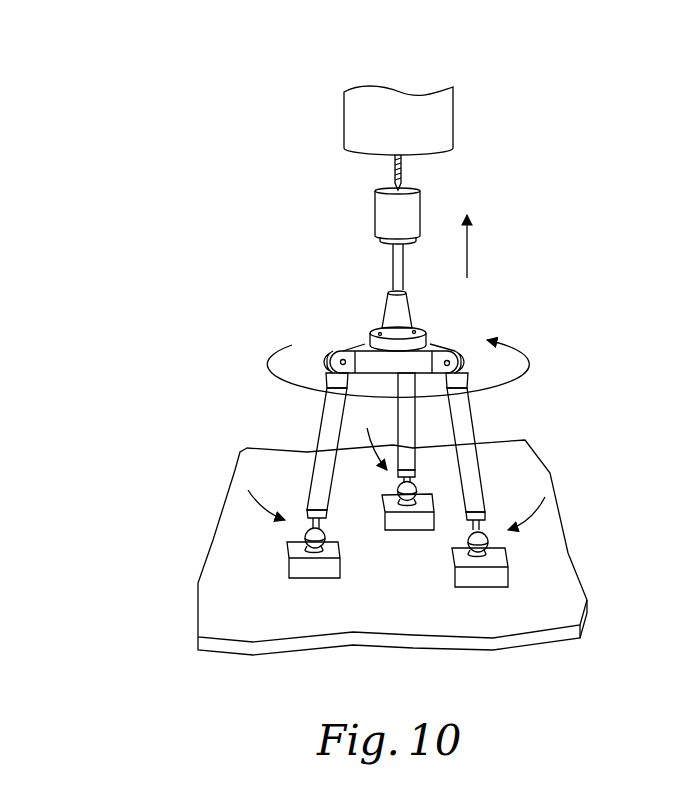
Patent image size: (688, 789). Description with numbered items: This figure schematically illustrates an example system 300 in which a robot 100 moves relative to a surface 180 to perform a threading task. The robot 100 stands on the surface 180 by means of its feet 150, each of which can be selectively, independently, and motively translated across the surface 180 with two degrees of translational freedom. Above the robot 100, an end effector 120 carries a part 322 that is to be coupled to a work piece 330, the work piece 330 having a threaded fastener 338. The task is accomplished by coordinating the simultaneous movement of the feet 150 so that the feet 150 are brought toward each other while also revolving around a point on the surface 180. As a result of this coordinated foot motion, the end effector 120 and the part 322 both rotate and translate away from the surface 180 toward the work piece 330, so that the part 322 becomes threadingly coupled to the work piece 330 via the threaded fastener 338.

The system 300 is at (236, 50).
The work piece 330 is at (440, 138).
The threaded fastener 338 is at (392, 179).
The part 322 is at (378, 216).
The robot 100 is at (350, 335).
The end effector 120 is at (407, 344).
The feet 150 is at (397, 535).
The surface 180 is at (195, 588).